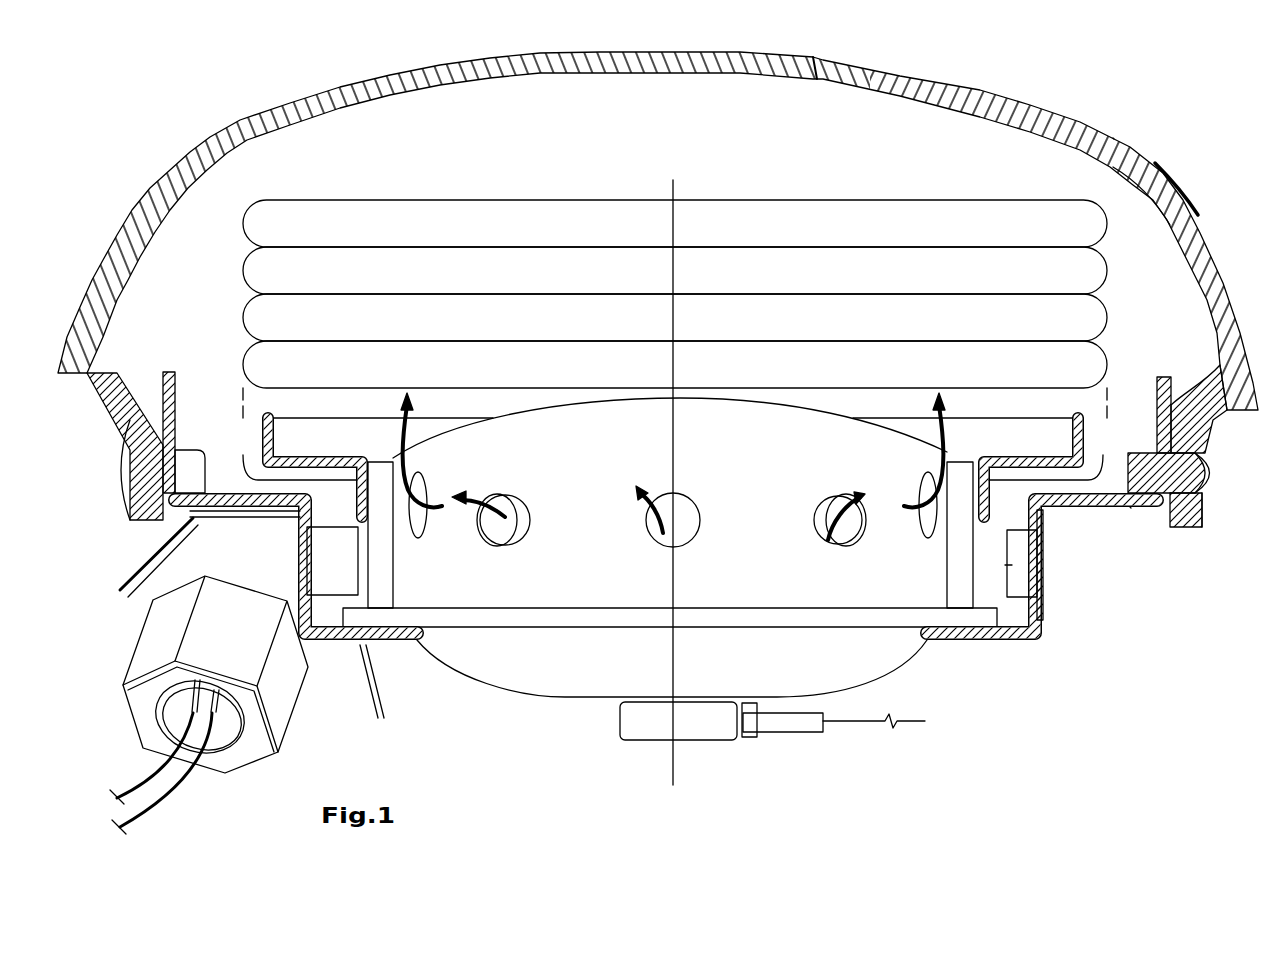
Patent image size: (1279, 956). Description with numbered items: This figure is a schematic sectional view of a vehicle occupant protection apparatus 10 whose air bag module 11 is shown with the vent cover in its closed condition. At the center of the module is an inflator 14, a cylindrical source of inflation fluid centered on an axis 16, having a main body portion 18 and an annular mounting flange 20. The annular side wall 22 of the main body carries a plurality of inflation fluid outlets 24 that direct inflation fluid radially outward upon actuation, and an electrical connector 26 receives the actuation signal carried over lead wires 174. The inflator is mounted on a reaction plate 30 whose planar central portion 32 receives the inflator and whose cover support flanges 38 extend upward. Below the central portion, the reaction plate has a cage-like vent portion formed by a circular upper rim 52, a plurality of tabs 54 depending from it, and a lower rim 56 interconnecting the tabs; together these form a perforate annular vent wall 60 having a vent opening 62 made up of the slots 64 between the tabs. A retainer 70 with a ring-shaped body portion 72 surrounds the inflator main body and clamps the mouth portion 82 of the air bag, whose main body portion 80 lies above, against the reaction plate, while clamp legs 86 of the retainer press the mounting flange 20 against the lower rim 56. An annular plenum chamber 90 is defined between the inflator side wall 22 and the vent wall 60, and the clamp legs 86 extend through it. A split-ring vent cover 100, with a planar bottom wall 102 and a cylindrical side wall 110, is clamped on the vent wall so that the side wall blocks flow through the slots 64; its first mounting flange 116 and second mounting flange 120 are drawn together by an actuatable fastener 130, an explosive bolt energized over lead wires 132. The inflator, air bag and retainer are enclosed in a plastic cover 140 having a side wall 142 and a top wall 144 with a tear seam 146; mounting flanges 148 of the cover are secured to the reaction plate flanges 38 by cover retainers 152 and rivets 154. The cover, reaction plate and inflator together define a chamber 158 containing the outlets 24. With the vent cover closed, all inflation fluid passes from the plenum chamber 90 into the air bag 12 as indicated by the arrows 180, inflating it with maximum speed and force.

The vehicle occupant protection apparatus 10 is at (936, 740).
The air bag module 11 is at (572, 740).
The inflatable vehicle occupant protection device 12 is at (748, 190).
The inflator 14 is at (766, 392).
The axis 16 is at (662, 188).
The main body portion 18 is at (556, 405).
The annular mounting flange 20 is at (987, 620).
The annular side wall 22 is at (915, 615).
The inflation fluid outlets 24 is at (512, 497).
The electrical connector 26 is at (700, 742).
The reaction plate 30 is at (1100, 478).
The central portion 32 is at (1130, 508).
The cover support flanges 38 is at (1163, 372).
The upper rim 52 is at (1043, 525).
The tabs 54 is at (1012, 565).
The lower rim 56 is at (1040, 617).
The vent wall 60 is at (1042, 634).
The vent opening 62 is at (320, 568).
The slots 64 is at (1025, 557).
The retainer 70 is at (250, 397).
The ring-shaped body portion 72 is at (315, 452).
The main body portion 80 is at (905, 200).
The mouth portion 82 is at (245, 455).
The clamp legs 86 is at (395, 640).
The annular plenum chamber 90 is at (322, 509).
The vent cover 100 is at (296, 738).
The bottom wall 102 is at (335, 645).
The cylindrical side wall 110 is at (300, 552).
The first radially extending mounting flange 116 is at (133, 590).
The second radially extending mounting flange 120 is at (388, 705).
The actuatable fastener 130 is at (118, 720).
The lead wires 132 is at (177, 793).
The cover 140 is at (977, 80).
The side wall 142 is at (1220, 252).
The top wall 144 is at (1048, 118).
The tear seam 146 is at (825, 80).
The mounting flanges 148 is at (1182, 530).
The cover retainers 152 is at (1205, 520).
The rivets 154 is at (1216, 480).
The chamber 158 is at (445, 149).
The lead wires 174 is at (862, 732).
The arrows 180 is at (405, 398).